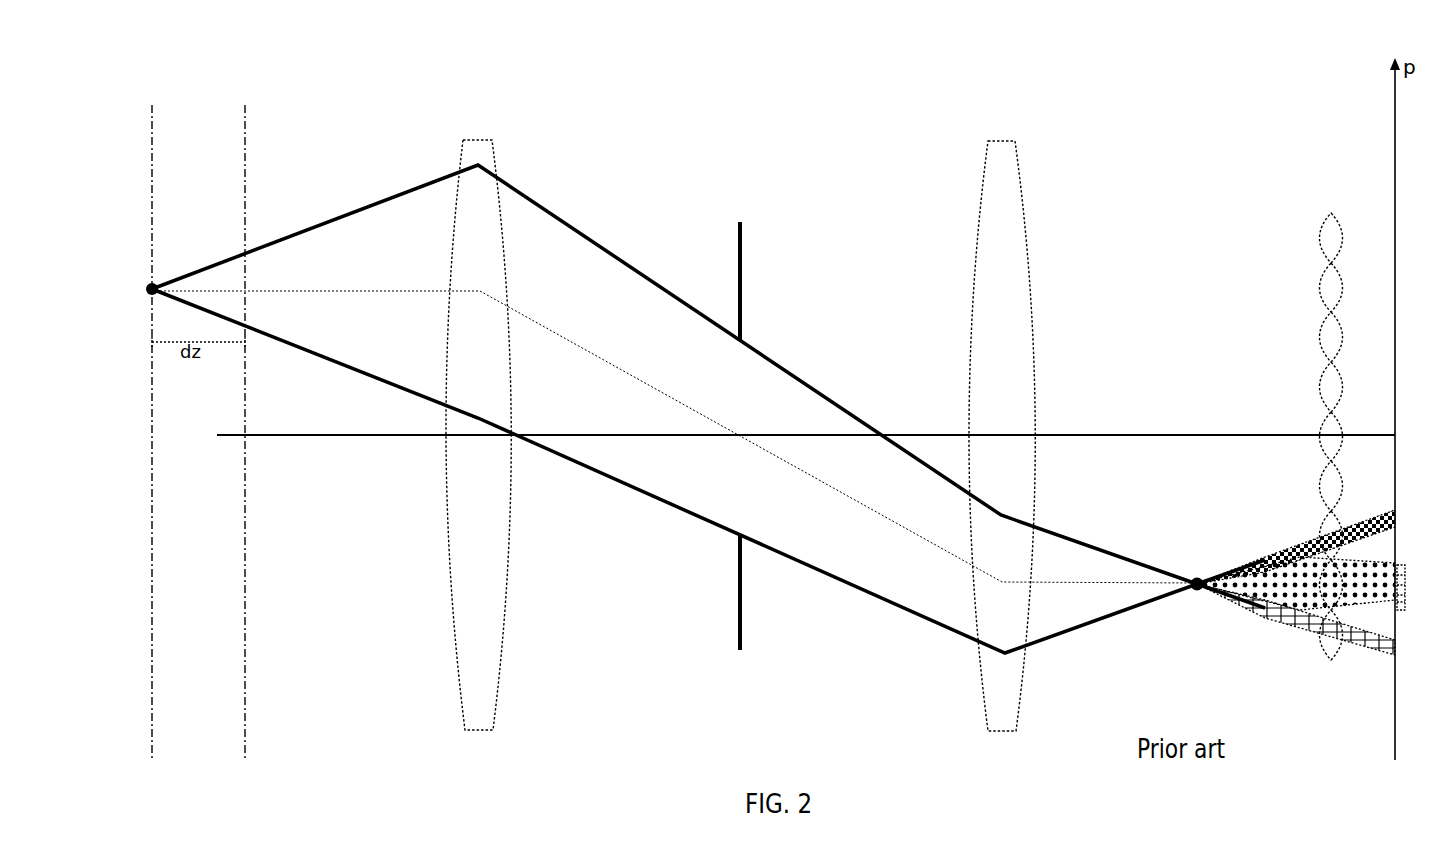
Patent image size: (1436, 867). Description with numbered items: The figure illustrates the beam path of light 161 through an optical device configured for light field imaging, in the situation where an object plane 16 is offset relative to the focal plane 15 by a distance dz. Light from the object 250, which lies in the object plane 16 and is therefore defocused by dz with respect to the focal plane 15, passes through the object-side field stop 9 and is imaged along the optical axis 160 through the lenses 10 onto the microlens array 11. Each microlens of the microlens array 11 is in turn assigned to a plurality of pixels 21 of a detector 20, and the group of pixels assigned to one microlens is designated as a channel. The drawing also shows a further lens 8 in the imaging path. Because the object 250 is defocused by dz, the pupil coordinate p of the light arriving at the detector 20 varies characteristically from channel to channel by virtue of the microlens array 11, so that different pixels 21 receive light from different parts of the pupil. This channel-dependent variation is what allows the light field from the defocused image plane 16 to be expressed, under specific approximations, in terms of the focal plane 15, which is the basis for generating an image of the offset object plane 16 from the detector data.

The first lens 8 is at (479, 140).
The object-side field stop 9 is at (740, 222).
The lenses 10 is at (1001, 141).
The microlens array 11 is at (1337, 209).
The focal plane 15 is at (245, 114).
The object plane 16 is at (152, 114).
The detector 20 is at (1408, 561).
The pixels 21 is at (1406, 576).
The optical axis 160 is at (1201, 435).
The beam path of light 161 is at (659, 285).
The object 250 is at (152, 283).